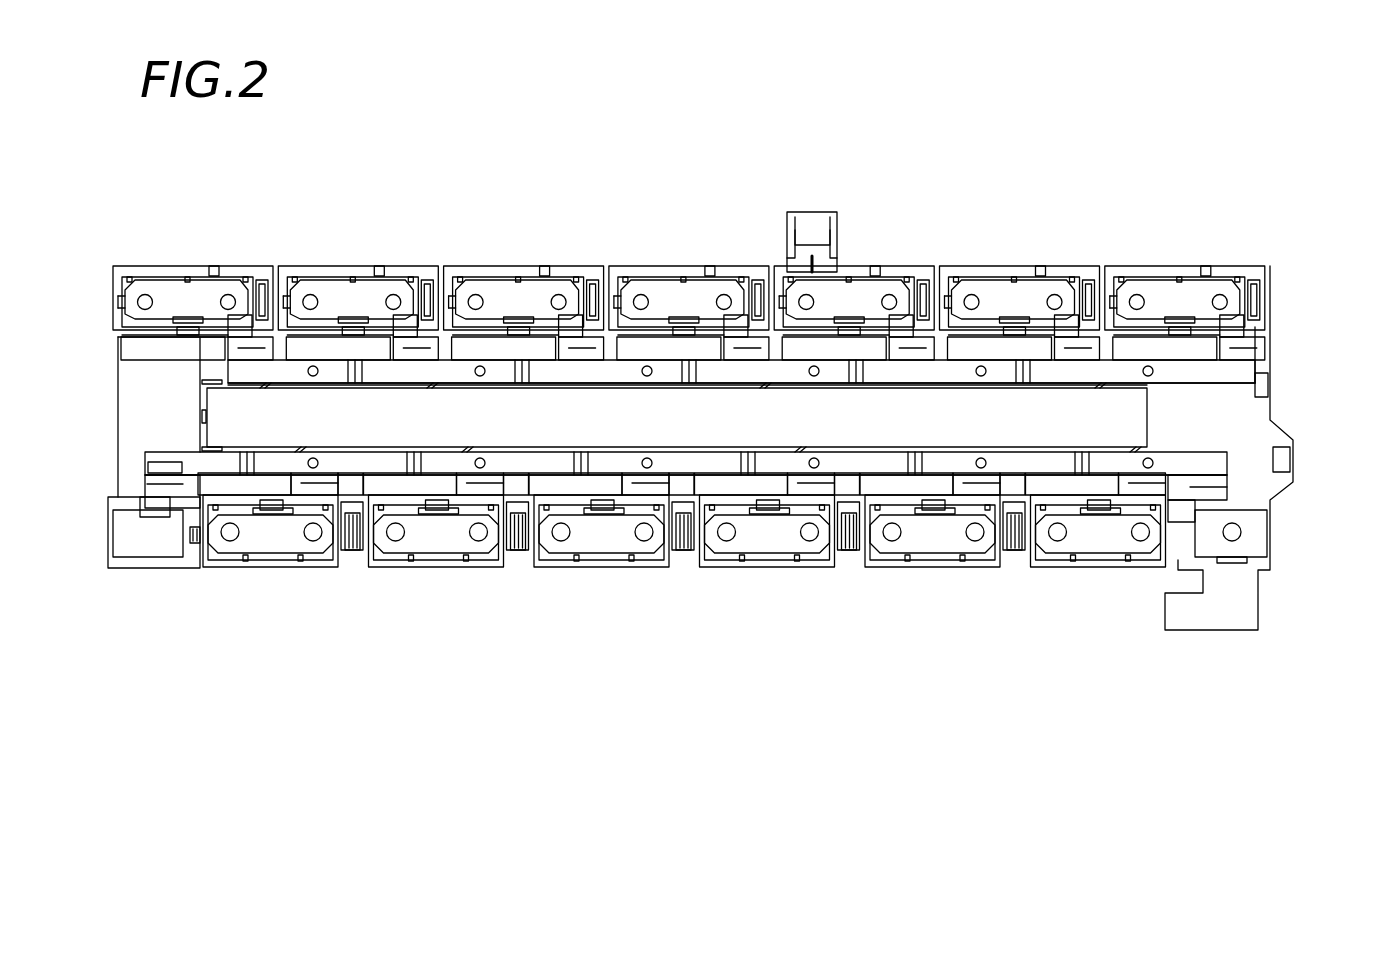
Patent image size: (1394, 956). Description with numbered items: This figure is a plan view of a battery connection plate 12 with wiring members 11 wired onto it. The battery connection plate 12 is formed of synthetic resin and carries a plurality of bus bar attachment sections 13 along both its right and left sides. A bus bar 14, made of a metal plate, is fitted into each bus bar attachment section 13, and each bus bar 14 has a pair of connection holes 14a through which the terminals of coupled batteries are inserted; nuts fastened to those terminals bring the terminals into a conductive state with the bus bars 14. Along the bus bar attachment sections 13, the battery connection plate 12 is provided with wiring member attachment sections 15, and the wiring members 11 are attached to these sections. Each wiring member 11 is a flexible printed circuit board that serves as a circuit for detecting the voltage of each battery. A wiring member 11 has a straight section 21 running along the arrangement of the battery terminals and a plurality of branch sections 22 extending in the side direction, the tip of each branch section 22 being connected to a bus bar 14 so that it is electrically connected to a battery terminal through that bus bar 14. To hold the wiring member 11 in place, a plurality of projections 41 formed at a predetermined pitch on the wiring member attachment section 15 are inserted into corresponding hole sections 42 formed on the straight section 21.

The wiring member 11 is at (1263, 348).
The battery connection plate 12 is at (1017, 257).
The bus bar attachment section 13 is at (207, 280).
The bus bar 14 is at (172, 296).
The connection hole 14a is at (311, 300).
The wiring member attachment section 15 is at (215, 352).
The straight section 21 is at (1165, 377).
The branch section 22 is at (240, 320).
The projection 41 is at (318, 378).
The hole section 42 is at (308, 371).